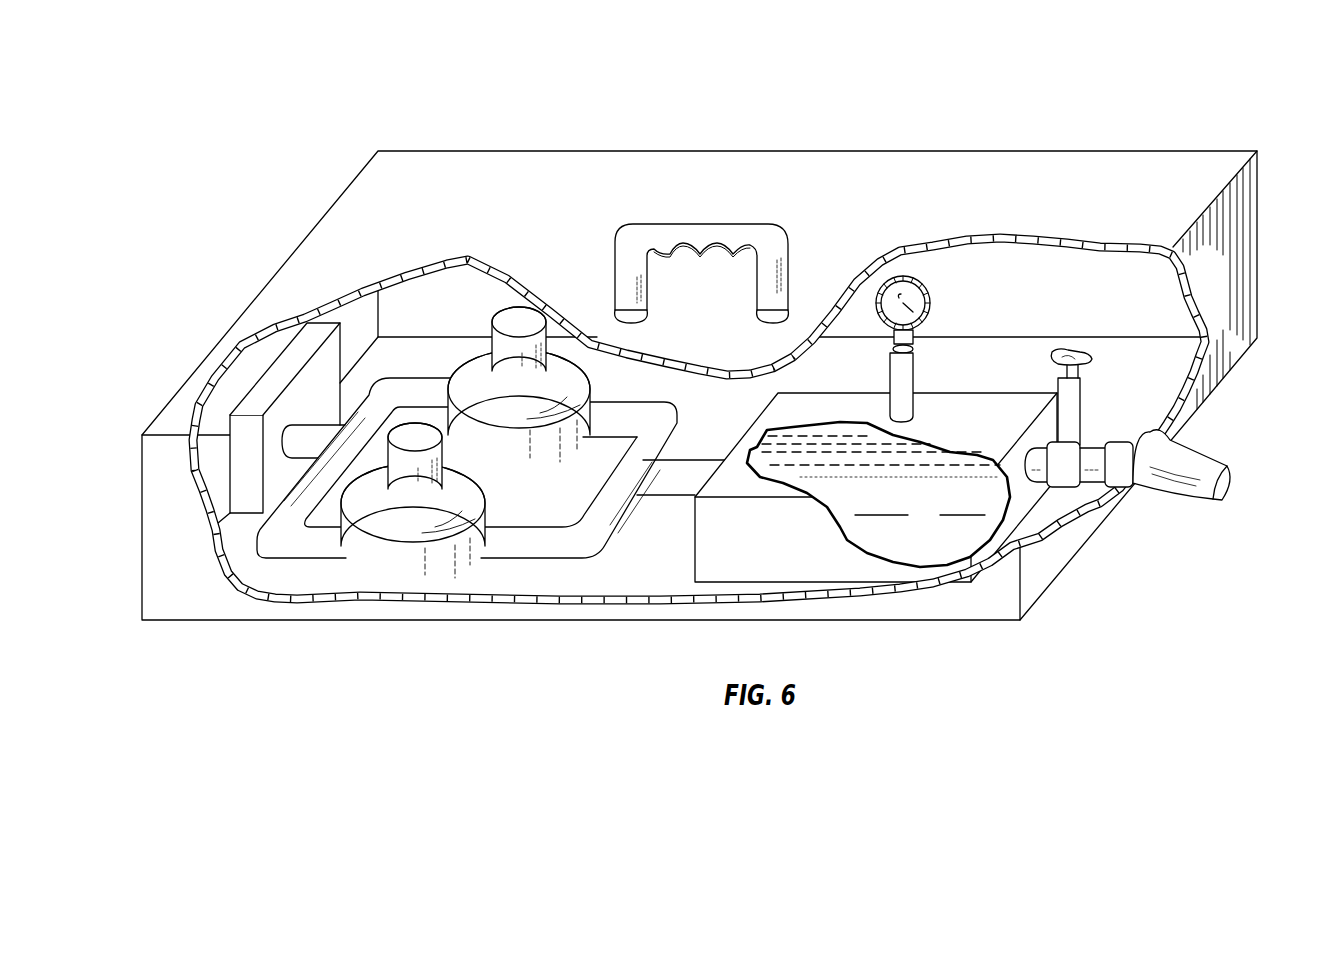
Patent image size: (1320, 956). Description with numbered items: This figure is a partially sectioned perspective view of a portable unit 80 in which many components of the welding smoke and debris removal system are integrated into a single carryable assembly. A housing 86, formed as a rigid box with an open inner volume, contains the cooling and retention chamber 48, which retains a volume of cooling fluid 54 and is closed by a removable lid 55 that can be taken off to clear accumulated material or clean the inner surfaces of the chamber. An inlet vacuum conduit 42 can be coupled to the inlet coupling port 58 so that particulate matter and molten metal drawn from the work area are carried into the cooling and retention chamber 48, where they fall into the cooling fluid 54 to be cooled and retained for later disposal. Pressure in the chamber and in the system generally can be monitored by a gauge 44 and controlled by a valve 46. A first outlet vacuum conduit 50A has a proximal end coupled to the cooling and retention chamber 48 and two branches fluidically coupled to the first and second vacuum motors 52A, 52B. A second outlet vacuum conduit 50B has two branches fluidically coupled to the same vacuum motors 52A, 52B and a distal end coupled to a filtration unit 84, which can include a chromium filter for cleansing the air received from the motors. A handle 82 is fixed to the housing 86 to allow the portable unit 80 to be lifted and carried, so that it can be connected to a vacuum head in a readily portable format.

The portable unit 80 is at (878, 114).
The handle 82 is at (683, 222).
The filtration unit 84 is at (230, 443).
The housing 86 is at (1147, 150).
The gauge 44 is at (900, 275).
The valve 46 is at (1090, 354).
The cooling and retention chamber 48 is at (995, 393).
The first outlet vacuum conduit 50A is at (568, 555).
The second outlet vacuum conduit 50B is at (283, 560).
The first vacuum motor 52A is at (400, 583).
The second vacuum motor 52B is at (472, 365).
The cooling fluid 54 is at (898, 530).
The removable lid 55 is at (980, 433).
The inlet coupling port 58 is at (1140, 423).
The inlet vacuum conduit 42 is at (1182, 483).